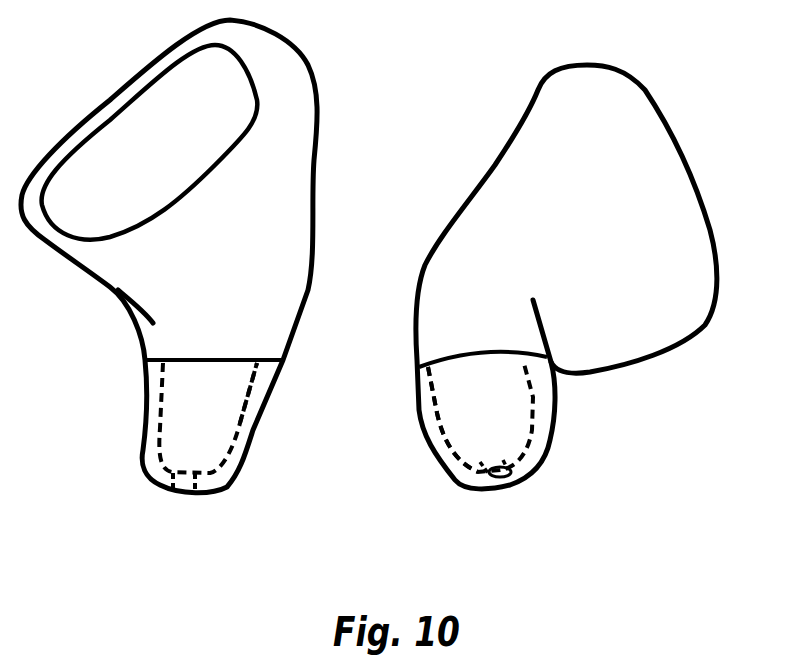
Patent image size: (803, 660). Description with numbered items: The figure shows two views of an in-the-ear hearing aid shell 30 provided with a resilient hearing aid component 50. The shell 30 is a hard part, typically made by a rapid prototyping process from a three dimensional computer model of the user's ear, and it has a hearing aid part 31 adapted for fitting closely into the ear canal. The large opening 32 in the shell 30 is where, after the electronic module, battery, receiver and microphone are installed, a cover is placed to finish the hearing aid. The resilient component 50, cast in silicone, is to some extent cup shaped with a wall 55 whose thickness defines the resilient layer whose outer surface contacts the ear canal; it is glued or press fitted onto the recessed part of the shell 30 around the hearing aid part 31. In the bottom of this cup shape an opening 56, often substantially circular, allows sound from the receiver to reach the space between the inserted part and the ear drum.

The shell 30 is at (327, 112).
The opening 32 is at (97, 160).
The resilient hearing aid component 50 is at (130, 456).
The hearing aid part 31 is at (187, 420).
The wall 55 is at (253, 413).
The opening 56 is at (177, 493).